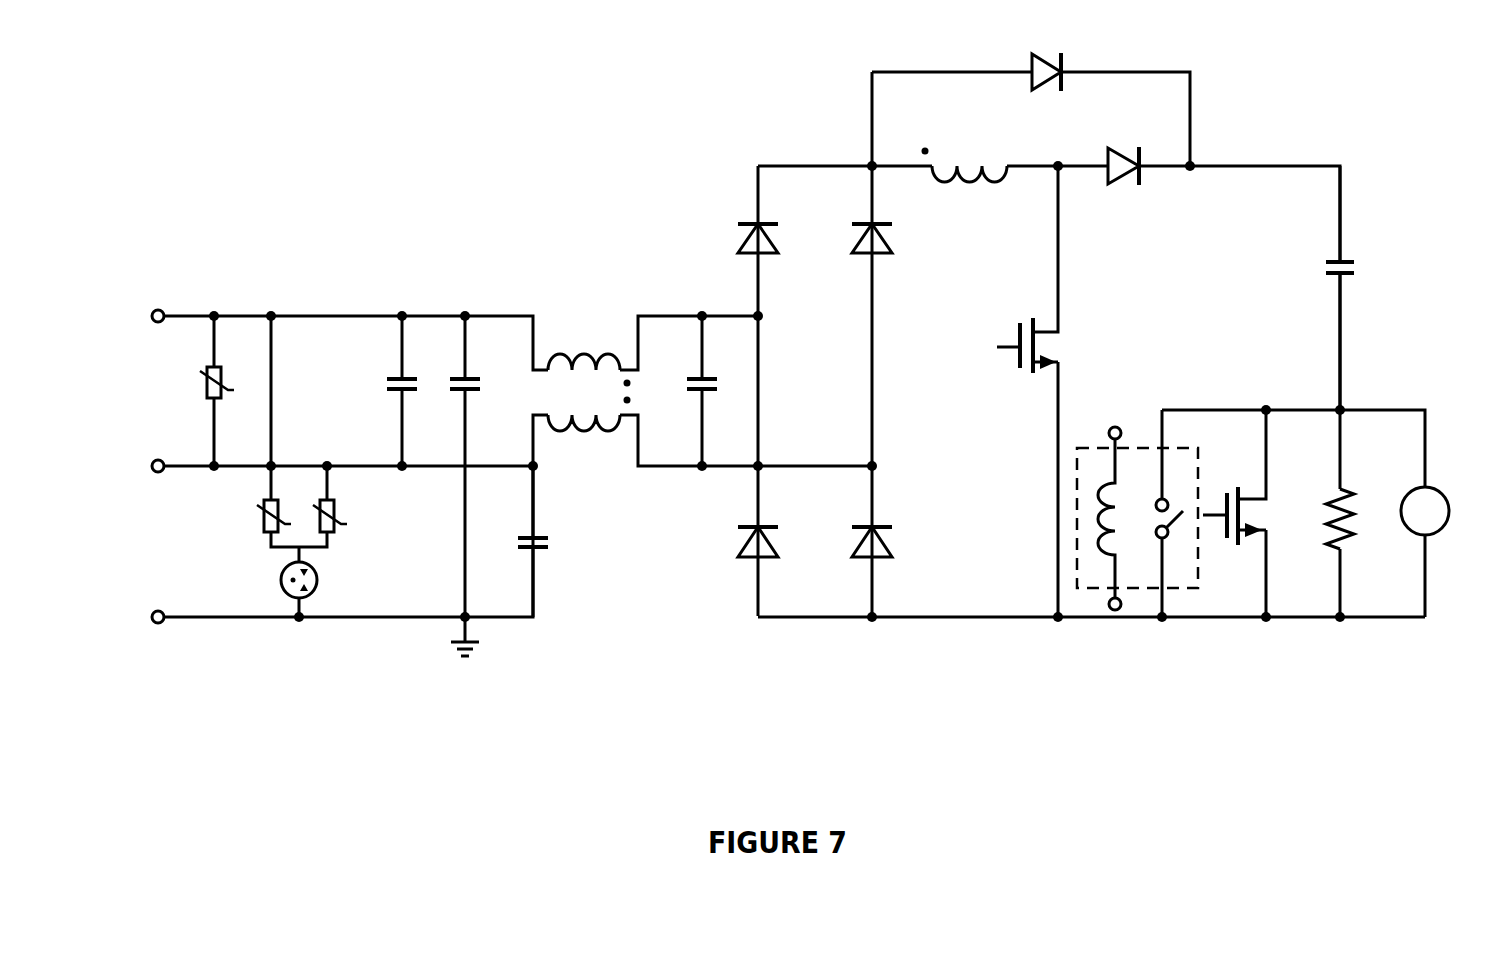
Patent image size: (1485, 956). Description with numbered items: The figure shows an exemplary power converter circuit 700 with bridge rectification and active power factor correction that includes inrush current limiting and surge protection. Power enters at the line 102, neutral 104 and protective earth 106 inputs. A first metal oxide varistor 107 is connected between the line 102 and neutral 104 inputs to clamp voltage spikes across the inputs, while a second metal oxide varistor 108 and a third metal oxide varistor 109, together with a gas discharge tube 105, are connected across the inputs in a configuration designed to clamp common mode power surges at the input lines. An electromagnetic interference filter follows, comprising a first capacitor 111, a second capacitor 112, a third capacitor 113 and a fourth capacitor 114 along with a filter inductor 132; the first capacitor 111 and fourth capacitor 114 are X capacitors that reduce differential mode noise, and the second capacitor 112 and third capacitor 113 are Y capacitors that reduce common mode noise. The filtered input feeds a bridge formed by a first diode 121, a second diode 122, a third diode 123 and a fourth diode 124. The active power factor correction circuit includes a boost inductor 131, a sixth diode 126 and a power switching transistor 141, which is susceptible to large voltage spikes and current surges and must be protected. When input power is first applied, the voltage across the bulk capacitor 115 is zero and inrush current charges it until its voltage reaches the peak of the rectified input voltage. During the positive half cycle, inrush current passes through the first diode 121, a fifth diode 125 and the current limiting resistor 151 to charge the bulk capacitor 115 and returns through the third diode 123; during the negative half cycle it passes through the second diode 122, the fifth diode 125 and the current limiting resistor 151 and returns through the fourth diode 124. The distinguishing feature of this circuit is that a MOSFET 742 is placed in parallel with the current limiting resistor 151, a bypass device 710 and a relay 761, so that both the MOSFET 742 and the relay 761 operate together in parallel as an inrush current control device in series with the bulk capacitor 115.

The power converter circuit 700 is at (598, 101).
The line 102 is at (175, 309).
The neutral 104 is at (175, 459).
The protective earth 106 is at (175, 610).
The metal oxide varistor MOV1 107 is at (196, 391).
The metal oxide varistor MOV2 108 is at (255, 433).
The metal oxide varistor MOV3 109 is at (344, 508).
The gas discharge tube GDT1 105 is at (318, 583).
The capacitor C1 111 is at (391, 391).
The capacitor C2 112 is at (455, 466).
The capacitor C3 113 is at (522, 541).
The capacitor C4 114 is at (692, 391).
The bulk capacitor C5 115 is at (1328, 288).
The inductor L2 132 is at (573, 407).
The inductor L1 131 is at (965, 164).
The diode D1 121 is at (751, 239).
The diode D2 122 is at (863, 239).
The diode D3 123 is at (863, 541).
The diode D4 124 is at (751, 541).
The diode D5 125 is at (1028, 73).
The diode D6 126 is at (1123, 168).
The power switching transistor Q1 141 is at (1027, 391).
The MOSFET Q2 742 is at (1238, 513).
The relay K1 761 is at (1137, 513).
The current limiting resistor R1 151 is at (1328, 521).
The bypass device BD1 710 is at (1417, 512).